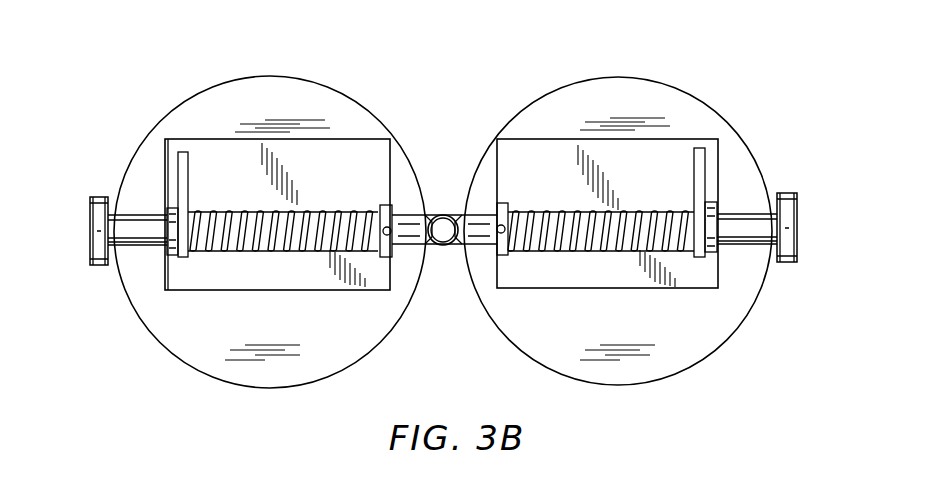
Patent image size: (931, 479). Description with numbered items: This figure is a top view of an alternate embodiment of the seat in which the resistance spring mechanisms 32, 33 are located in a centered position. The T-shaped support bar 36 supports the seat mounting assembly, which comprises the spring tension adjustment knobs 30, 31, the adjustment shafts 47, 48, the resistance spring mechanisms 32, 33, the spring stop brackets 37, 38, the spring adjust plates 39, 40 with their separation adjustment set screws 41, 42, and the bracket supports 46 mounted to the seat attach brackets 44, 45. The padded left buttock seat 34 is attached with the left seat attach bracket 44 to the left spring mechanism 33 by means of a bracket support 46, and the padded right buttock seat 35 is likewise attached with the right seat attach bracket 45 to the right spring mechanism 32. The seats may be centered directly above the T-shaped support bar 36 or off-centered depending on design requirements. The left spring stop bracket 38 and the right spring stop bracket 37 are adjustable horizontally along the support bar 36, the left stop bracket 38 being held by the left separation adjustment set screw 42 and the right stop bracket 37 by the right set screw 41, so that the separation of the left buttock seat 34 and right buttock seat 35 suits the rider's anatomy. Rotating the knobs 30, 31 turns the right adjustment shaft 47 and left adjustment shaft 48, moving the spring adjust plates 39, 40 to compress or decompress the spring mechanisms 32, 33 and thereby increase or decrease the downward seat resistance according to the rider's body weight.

The right spring tension adjustment knob 30 is at (96, 196).
The left spring tension adjustment knob 31 is at (779, 193).
The right resistance spring mechanism 32 is at (259, 252).
The left resistance spring mechanism 33 is at (598, 252).
The left buttock seat 34 is at (652, 88).
The right buttock seat 35 is at (228, 103).
The T-shaped support bar 36 is at (442, 214).
The right spring stop bracket 37 is at (384, 258).
The left spring stop bracket 38 is at (505, 258).
The right spring adjust plate 39 is at (173, 258).
The left spring adjust plate 40 is at (712, 258).
The right separation adjustment set screw 41 is at (416, 246).
The left separation adjustment set screw 42 is at (498, 236).
The left seat attach bracket 44 is at (525, 189).
The right seat attach bracket 45 is at (318, 189).
The bracket support 46 is at (184, 170).
The right adjustment shaft 47 is at (146, 226).
The left adjustment shaft 48 is at (743, 222).